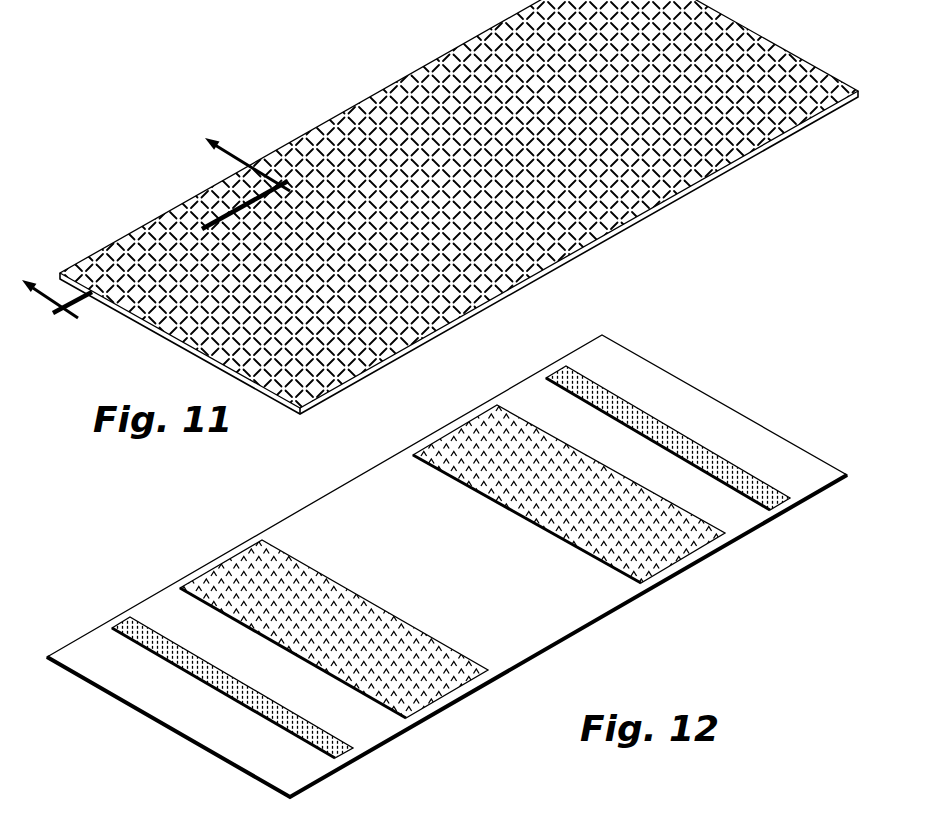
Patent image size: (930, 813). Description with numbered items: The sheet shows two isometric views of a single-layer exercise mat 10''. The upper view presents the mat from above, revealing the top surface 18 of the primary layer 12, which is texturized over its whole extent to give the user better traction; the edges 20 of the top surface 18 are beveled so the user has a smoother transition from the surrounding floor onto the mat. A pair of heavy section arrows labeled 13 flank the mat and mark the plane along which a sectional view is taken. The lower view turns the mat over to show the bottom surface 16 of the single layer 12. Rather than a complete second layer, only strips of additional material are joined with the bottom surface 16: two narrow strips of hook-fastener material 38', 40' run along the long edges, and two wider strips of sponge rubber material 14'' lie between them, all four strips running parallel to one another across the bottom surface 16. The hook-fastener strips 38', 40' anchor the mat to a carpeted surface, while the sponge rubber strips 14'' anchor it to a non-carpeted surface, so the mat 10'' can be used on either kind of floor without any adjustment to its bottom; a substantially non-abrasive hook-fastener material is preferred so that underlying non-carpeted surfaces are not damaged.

In FIG. 11, the single layer mat 10'' is at (459, 207).
In FIG. 12, the single layer mat 10'' is at (451, 547).
In FIG. 11, the primary layer 12 is at (637, 181).
In FIG. 12, the primary layer 12 is at (790, 443).
In FIG. 11, the section line indicator 13 is at (156, 228).
In FIG. 12, the bottom surface 16 is at (742, 427).
In FIG. 11, the top surface 18 is at (760, 112).
In FIG. 11, the edges 20 is at (735, 163).
In FIG. 12, the strips of sponge rubber material 14'' is at (484, 571).
In FIG. 12, the strip of hook-fastener material 38' is at (288, 701).
In FIG. 12, the strip of hook-fastener material 40' is at (698, 462).